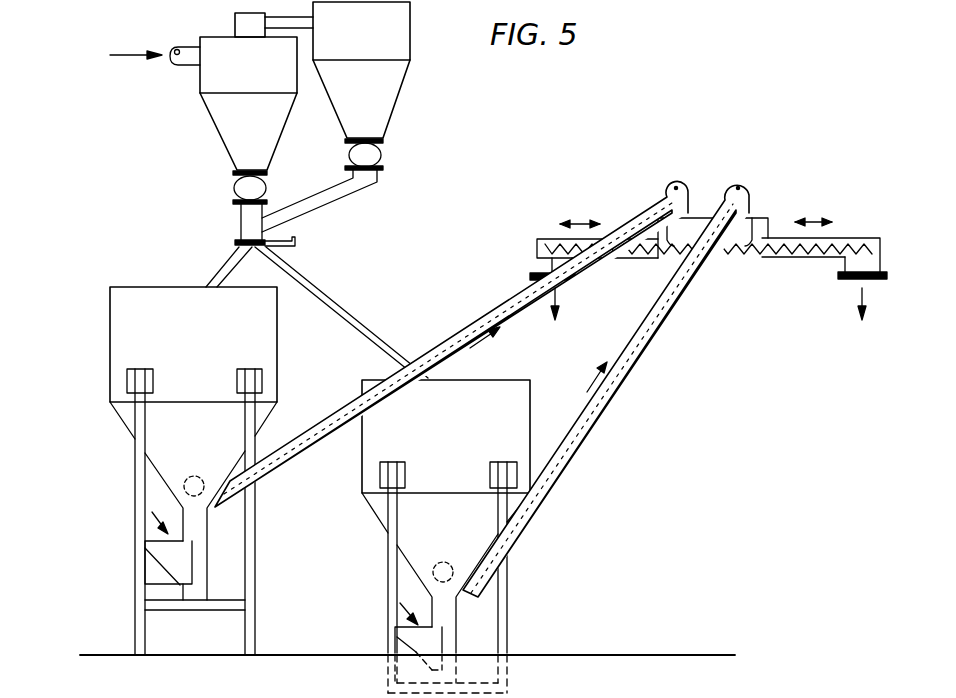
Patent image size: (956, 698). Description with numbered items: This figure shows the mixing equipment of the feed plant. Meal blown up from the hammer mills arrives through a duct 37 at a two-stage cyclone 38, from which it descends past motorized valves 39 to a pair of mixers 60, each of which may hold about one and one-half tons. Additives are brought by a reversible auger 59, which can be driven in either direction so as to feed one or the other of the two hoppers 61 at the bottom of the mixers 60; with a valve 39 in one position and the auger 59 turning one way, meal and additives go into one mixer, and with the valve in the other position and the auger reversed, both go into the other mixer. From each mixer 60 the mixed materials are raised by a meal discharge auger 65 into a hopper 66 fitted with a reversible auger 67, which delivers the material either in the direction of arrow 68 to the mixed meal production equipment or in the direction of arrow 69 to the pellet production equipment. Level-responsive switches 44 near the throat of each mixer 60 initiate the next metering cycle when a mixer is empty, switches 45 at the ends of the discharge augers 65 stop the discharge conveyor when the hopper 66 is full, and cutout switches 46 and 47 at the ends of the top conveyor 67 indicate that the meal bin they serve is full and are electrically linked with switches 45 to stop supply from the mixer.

The duct 37 is at (188, 60).
The two-stage cyclone 38 is at (262, 80).
The motorized valve 39 is at (233, 188).
The level-responsive switch 44 is at (183, 488).
The cutout switch 45 is at (757, 178).
The cutout switch 46 is at (556, 247).
The cutout switch 47 is at (852, 268).
The reversible auger 59 is at (152, 521).
The mixer 60 is at (205, 350).
The hopper 61 is at (167, 563).
The meal discharge auger 65 is at (463, 327).
The hopper 66 is at (690, 232).
The reversible auger 67 is at (742, 243).
The arrow 68 is at (573, 306).
The arrow 69 is at (848, 307).